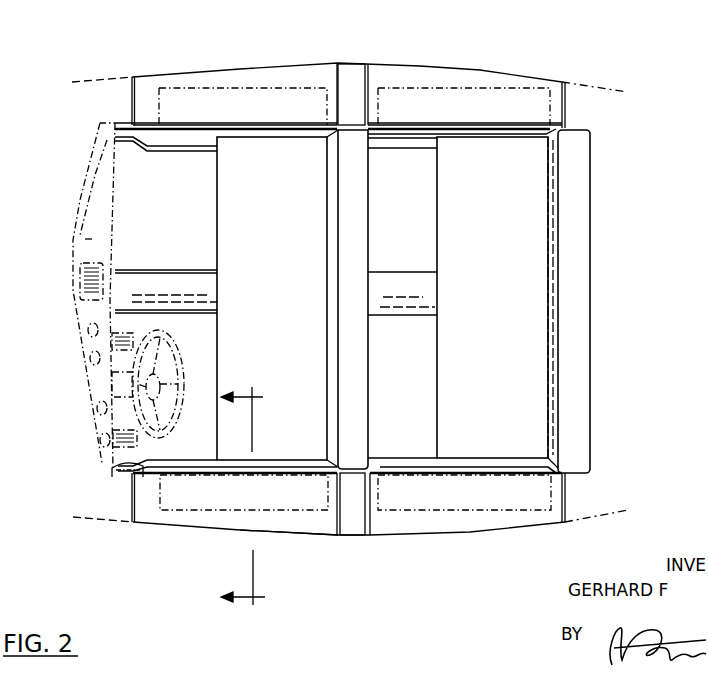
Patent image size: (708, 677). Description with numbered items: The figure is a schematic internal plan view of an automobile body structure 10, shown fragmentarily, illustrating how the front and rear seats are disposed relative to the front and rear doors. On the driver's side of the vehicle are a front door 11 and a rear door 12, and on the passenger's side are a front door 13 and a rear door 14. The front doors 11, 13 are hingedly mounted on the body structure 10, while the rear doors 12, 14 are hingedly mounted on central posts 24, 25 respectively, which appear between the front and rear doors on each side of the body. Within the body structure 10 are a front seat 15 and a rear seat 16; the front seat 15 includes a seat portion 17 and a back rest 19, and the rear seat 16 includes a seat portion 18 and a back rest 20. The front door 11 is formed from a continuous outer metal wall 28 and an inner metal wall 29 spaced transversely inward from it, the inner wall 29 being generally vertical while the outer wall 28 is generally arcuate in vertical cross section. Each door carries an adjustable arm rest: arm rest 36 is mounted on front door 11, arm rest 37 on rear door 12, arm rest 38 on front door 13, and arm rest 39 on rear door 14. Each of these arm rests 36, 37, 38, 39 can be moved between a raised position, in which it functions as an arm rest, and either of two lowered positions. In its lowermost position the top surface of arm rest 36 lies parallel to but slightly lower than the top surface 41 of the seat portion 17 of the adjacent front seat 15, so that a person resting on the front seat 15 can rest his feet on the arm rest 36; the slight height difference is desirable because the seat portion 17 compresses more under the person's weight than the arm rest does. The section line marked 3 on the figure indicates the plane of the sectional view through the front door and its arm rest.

The automobile body structure 10 is at (120, 527).
The front door 11 is at (187, 529).
The rear door 12 is at (462, 537).
The front door 13 is at (279, 63).
The rear door 14 is at (474, 66).
The front seat 15 is at (217, 178).
The rear seat 16 is at (592, 229).
The seat portion 17 is at (215, 236).
The seat portion 18 is at (492, 297).
The back rest 19 is at (333, 178).
The back rest 20 is at (552, 184).
The central post 24 is at (350, 523).
The central post 25 is at (350, 82).
The outer metal wall 28 is at (291, 536).
The inner metal wall 29 is at (118, 471).
The arm rest 36 is at (266, 470).
The arm rest 37 is at (478, 470).
The arm rest 38 is at (257, 133).
The arm rest 39 is at (462, 133).
The top surface 41 is at (277, 298).
The section line 3- 3 is at (242, 498).